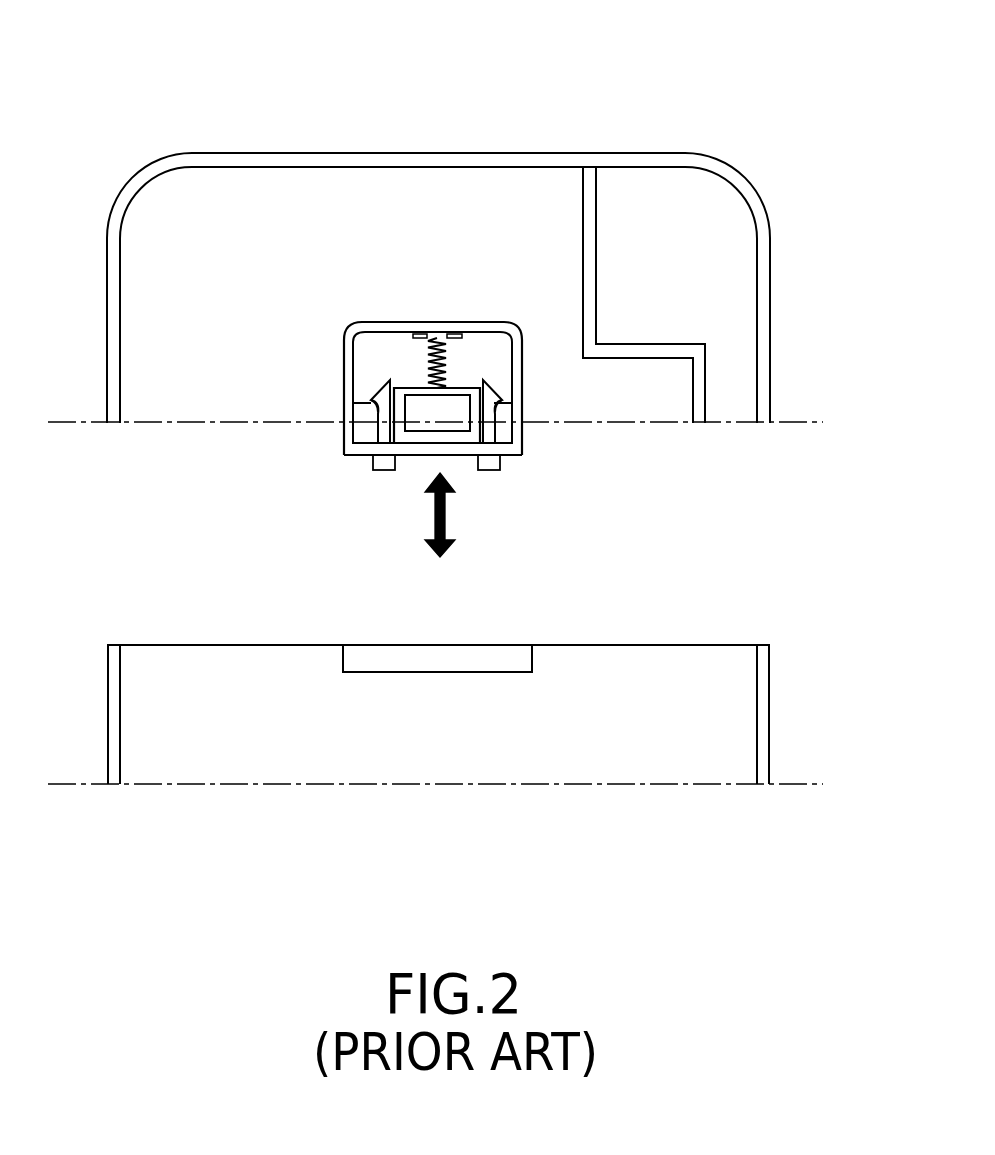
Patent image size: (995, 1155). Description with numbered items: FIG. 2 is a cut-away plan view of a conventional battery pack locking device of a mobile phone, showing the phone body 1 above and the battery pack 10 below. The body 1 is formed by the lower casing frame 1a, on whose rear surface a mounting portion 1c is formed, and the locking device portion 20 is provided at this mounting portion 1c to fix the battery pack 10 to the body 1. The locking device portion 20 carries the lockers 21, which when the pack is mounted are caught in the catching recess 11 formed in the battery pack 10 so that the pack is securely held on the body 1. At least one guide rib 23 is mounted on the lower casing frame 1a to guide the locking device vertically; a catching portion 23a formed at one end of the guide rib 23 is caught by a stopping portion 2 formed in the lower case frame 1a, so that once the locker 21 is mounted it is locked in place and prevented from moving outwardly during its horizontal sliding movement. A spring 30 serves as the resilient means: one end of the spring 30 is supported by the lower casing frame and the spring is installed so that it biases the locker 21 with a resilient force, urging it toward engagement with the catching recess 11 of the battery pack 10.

The body 1 is at (797, 306).
The lower casing frame 1a is at (595, 167).
The mounting portion 1c is at (392, 352).
The stopping portion 2 is at (512, 405).
The battery pack 10 is at (797, 704).
The catching recess 11 is at (448, 660).
The locking device portion 20 is at (352, 459).
The locker 21 is at (386, 470).
The guide rib 23 is at (385, 427).
The catching portion 23a is at (507, 383).
The spring 30 is at (447, 355).